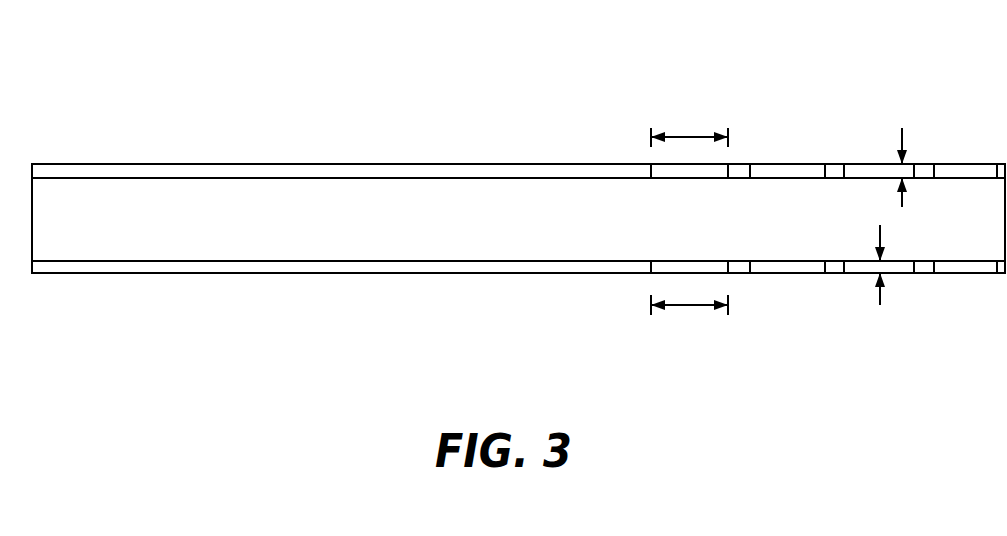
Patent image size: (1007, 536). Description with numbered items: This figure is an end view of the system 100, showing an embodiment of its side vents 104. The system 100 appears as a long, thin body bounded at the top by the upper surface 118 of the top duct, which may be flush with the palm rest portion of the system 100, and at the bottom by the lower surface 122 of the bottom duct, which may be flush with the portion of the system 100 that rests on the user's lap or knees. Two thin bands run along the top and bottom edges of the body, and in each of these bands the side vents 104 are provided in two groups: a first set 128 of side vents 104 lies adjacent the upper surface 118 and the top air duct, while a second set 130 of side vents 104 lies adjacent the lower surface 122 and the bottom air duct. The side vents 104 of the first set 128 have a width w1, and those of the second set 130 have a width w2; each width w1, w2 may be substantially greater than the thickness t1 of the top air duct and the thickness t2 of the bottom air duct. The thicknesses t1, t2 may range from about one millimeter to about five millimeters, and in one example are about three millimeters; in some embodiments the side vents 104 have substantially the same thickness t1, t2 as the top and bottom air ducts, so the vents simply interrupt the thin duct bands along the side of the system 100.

The system 100 is at (518, 210).
The upper surface 118 is at (513, 163).
The lower surface 122 is at (457, 276).
The first set of side vents 128 is at (792, 90).
The second set of side vents 130 is at (825, 330).
The side vents 104 is at (865, 176).
The width of side vents of first set w1 is at (685, 137).
The width of side vents of second set w2 is at (683, 307).
The thickness of top air duct t1 is at (893, 163).
The thickness of bottom air duct t2 is at (882, 265).